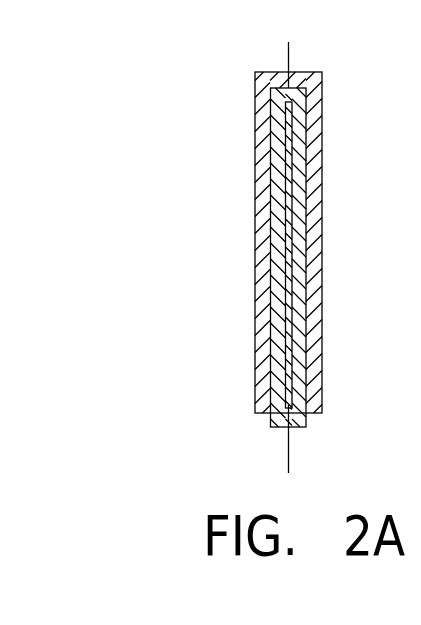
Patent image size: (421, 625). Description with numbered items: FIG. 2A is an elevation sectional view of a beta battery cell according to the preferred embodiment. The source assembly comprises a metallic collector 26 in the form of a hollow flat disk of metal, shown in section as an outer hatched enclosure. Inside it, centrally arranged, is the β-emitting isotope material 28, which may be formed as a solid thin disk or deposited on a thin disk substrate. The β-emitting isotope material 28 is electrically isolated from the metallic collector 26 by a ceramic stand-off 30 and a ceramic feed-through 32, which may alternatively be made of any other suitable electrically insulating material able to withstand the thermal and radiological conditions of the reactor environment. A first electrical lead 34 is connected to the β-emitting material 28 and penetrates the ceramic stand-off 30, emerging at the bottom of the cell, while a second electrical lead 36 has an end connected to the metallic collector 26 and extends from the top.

The metallic collector 26 is at (254, 105).
The β-emitting isotope material 28 is at (282, 228).
The ceramic stand-off 30 is at (316, 177).
The ceramic feed-through 32 is at (271, 427).
The first electrical lead 34 is at (289, 462).
The second electrical lead 36 is at (288, 50).